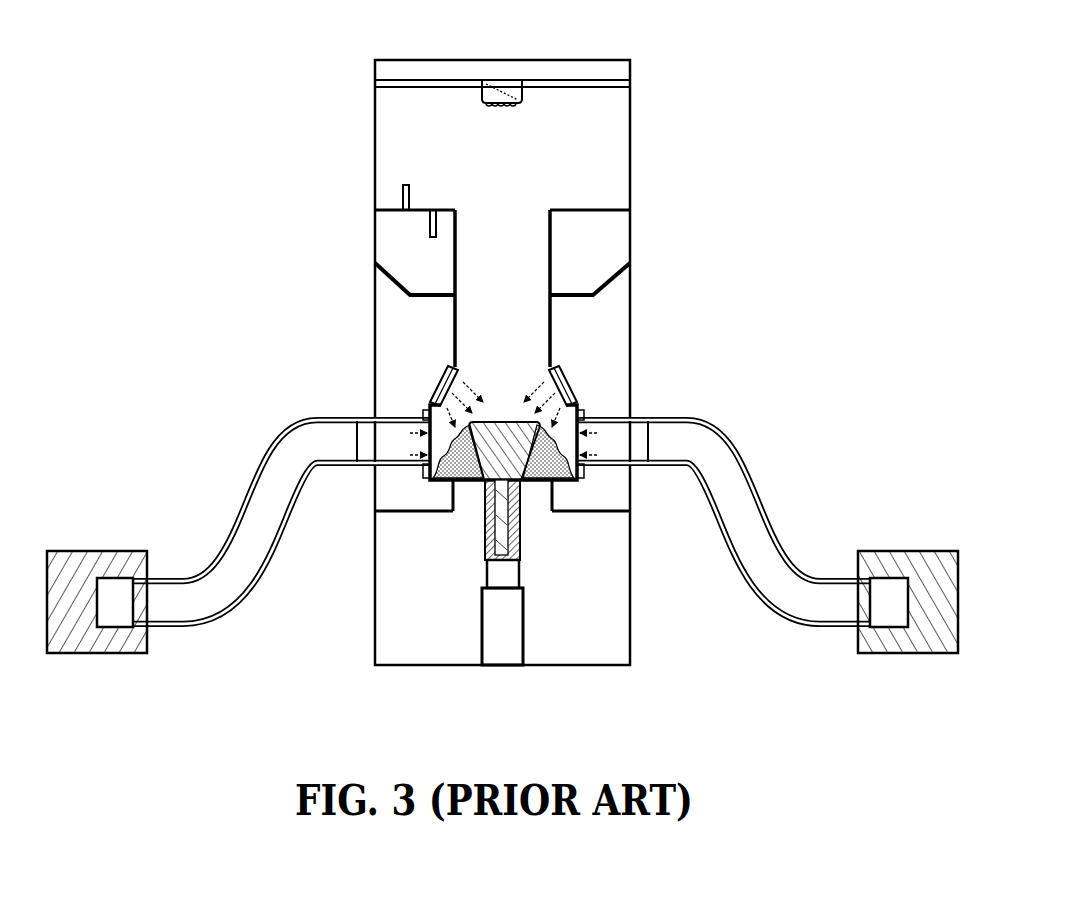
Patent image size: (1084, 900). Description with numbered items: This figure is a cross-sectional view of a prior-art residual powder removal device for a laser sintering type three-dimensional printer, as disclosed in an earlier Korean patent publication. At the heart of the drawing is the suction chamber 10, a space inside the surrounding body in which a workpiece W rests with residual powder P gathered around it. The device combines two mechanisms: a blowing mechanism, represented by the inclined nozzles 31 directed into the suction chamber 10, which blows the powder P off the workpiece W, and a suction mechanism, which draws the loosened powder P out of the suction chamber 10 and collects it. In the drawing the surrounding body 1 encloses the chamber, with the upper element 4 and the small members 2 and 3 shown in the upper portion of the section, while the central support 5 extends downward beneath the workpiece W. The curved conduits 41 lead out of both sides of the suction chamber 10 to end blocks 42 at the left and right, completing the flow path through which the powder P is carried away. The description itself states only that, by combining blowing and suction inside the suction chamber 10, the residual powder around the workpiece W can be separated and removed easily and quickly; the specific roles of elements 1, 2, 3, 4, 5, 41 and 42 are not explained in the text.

The housing body 1 is at (534, 236).
The pin 2 is at (430, 226).
The pin 3 is at (403, 194).
The upper fixing element 4 is at (480, 98).
The support rod 5 is at (472, 482).
The suction chamber 10 is at (520, 372).
The nozzle 31 is at (560, 381).
The pipe 41 is at (275, 442).
The pipe end block 42 is at (103, 552).
The workpiece W is at (447, 482).
The powder P is at (535, 482).